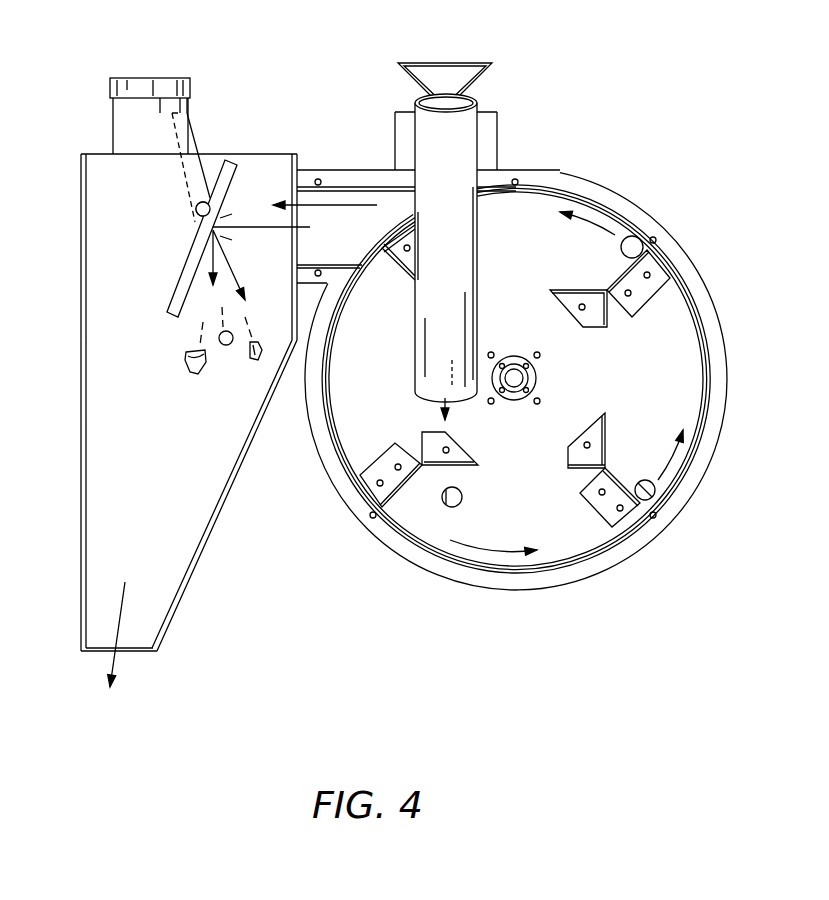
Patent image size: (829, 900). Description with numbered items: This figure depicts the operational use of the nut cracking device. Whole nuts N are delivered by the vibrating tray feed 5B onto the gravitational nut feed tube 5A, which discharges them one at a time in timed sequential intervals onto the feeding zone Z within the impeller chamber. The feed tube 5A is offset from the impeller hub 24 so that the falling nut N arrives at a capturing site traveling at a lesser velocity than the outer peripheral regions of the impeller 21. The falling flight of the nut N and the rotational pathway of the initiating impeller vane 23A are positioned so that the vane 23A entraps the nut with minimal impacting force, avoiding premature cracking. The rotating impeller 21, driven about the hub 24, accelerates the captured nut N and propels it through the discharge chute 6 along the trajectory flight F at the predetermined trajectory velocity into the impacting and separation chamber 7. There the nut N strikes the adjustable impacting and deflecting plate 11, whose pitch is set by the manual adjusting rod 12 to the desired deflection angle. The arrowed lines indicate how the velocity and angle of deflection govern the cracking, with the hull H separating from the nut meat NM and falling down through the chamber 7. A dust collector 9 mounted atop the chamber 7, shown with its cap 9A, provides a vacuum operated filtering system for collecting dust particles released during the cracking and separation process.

The nut feed tube 5A is at (465, 140).
The vibrating tray feed 5B is at (450, 72).
The discharge chute 6 is at (370, 193).
The impacting and separation chamber 7 is at (95, 232).
The dust collector 9 is at (130, 122).
The cylinder cap 9A is at (148, 78).
The impacting and deflecting plate 11 is at (178, 287).
The manual adjusting rod 12 is at (198, 143).
The impeller 21 is at (688, 368).
The impeller vane 23A is at (373, 478).
The impeller hub 24 is at (528, 373).
The whole nut N is at (633, 238).
The nut meat NM is at (218, 340).
The hull H is at (192, 360).
The feeding zone Z is at (430, 488).
The trajectory flight F is at (327, 205).